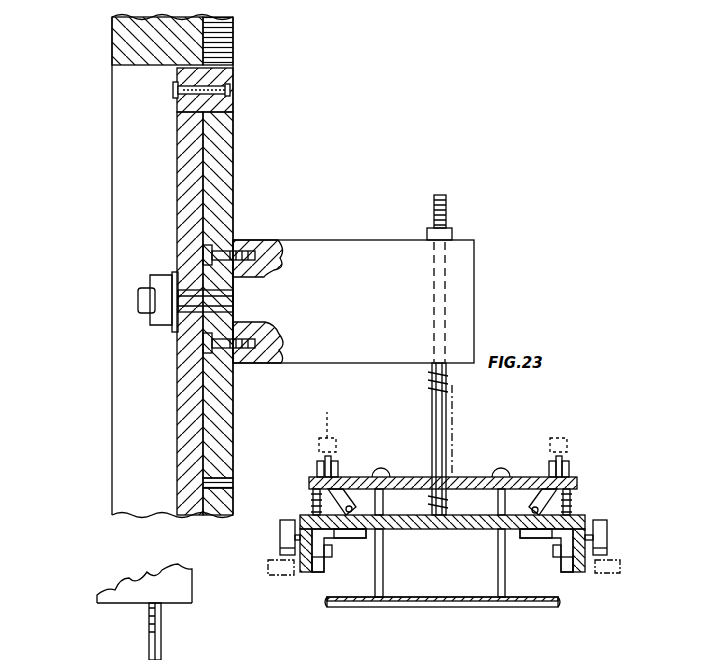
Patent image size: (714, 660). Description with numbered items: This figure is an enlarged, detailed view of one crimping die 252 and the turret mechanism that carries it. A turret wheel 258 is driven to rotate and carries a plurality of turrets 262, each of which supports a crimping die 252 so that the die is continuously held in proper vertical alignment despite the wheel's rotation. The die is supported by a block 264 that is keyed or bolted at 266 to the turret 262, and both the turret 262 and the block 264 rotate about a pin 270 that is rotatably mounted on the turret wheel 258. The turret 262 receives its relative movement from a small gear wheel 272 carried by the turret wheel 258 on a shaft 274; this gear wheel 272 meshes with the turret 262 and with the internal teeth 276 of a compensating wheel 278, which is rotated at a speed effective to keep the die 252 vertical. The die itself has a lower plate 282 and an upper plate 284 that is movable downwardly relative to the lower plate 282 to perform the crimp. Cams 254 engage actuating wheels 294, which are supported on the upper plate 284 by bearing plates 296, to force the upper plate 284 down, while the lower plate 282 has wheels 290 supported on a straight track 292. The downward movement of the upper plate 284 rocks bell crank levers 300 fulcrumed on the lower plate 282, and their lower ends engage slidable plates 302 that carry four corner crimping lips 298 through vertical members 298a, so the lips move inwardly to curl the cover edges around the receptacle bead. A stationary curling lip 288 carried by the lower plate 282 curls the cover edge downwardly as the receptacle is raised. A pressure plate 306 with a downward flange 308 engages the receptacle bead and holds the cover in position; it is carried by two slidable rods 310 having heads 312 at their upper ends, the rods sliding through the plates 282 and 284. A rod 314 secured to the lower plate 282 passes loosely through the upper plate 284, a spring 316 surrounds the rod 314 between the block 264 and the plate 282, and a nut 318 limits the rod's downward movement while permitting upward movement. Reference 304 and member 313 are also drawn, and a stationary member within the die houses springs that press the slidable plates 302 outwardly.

The compensating wheel 278 is at (122, 36).
The internal teeth 276 is at (223, 48).
The small gear wheel 272 is at (227, 83).
The shaft 274 is at (188, 94).
The turret wheel 258 is at (183, 156).
The turret 262 is at (228, 182).
The block 264 is at (330, 240).
The bolts 266 is at (241, 252).
The pin 270 is at (223, 298).
The rod 314 is at (446, 204).
The nut 318 is at (452, 232).
The spring 316 is at (432, 377).
The upper plate 284 is at (578, 484).
The heads 312 is at (382, 470).
The actuating wheels 294 is at (324, 458).
The bearing plates 296 is at (317, 467).
The cam 254 is at (598, 428).
The bell crank levers 300 is at (342, 502).
The threaded pin 304 is at (312, 502).
The slidable rods 310 is at (383, 503).
The lower plate 282 is at (588, 520).
The crimping die 252 is at (615, 519).
The corner crimping lips 298 is at (317, 570).
The vertical members 298a is at (330, 554).
The curling lip 288 is at (323, 570).
The slidable plates 302 is at (358, 536).
The wheels 290 is at (280, 531).
The straight track 292 is at (268, 566).
The housing 313 is at (448, 560).
The pressure plate 306 is at (483, 610).
The downward flange 308 is at (330, 608).